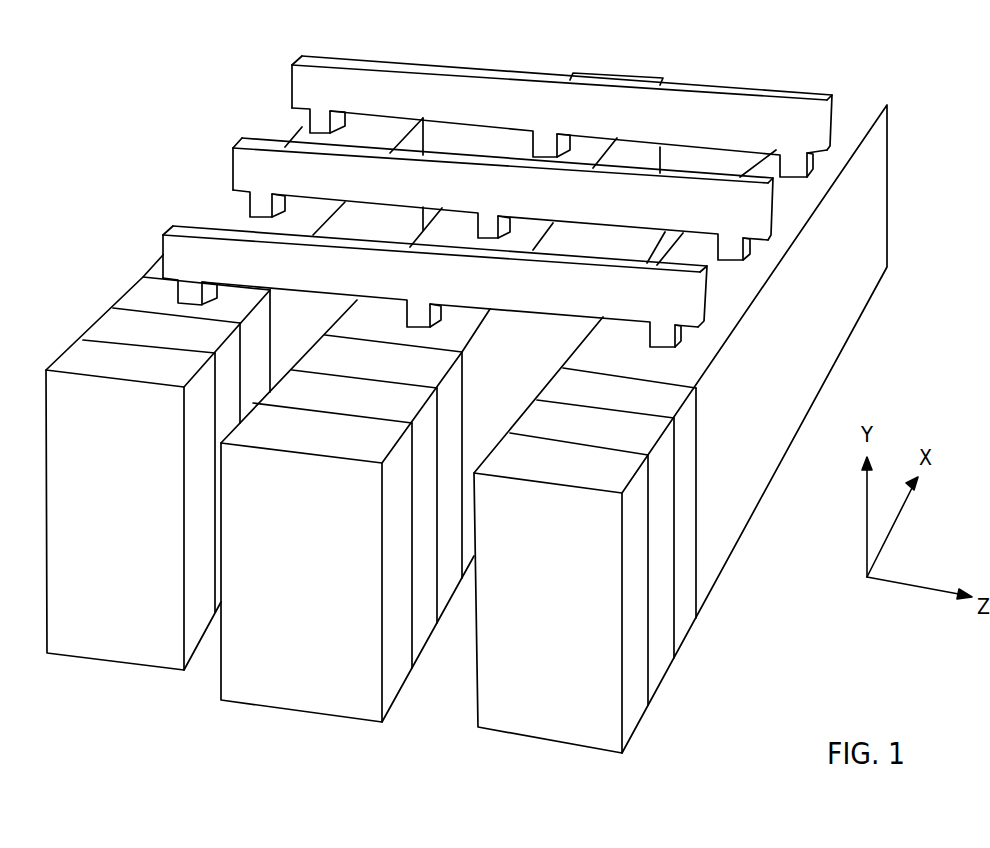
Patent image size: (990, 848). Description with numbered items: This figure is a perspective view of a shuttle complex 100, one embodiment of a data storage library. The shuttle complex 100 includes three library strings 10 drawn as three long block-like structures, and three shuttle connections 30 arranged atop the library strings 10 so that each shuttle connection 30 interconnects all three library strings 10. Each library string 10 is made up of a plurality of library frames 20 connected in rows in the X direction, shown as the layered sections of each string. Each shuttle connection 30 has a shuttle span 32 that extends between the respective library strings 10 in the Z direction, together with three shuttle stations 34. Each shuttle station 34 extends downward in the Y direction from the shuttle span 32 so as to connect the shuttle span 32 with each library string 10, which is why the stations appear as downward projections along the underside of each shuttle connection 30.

The shuttle complex 100 is at (711, 34).
The library string 10 is at (131, 704).
The library frame 20 is at (682, 545).
The shuttle connection 30 is at (561, 122).
The shuttle span 32 is at (427, 97).
The shuttle station 34 is at (318, 123).